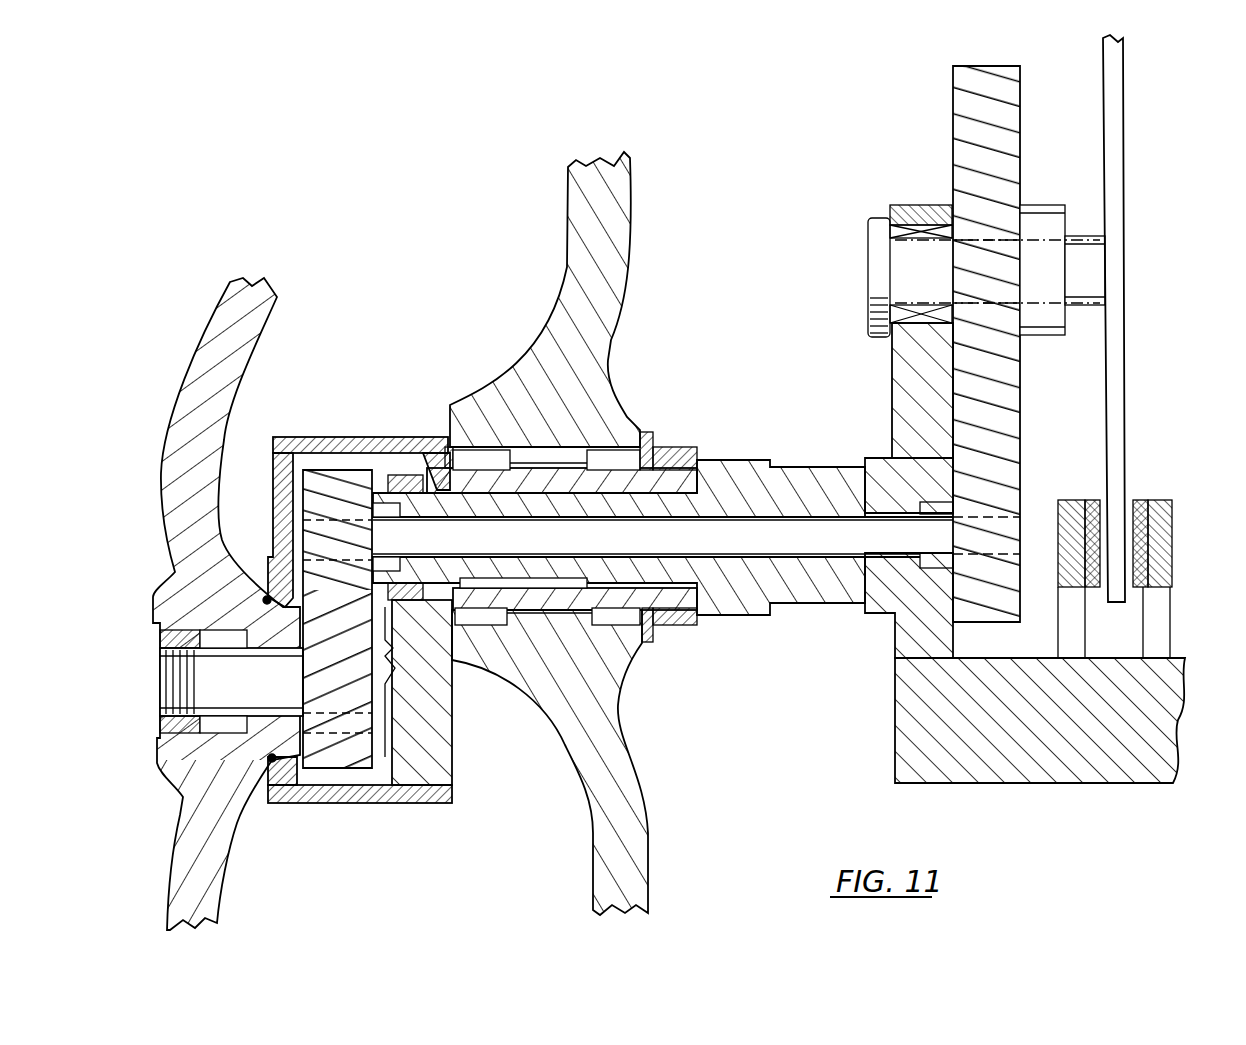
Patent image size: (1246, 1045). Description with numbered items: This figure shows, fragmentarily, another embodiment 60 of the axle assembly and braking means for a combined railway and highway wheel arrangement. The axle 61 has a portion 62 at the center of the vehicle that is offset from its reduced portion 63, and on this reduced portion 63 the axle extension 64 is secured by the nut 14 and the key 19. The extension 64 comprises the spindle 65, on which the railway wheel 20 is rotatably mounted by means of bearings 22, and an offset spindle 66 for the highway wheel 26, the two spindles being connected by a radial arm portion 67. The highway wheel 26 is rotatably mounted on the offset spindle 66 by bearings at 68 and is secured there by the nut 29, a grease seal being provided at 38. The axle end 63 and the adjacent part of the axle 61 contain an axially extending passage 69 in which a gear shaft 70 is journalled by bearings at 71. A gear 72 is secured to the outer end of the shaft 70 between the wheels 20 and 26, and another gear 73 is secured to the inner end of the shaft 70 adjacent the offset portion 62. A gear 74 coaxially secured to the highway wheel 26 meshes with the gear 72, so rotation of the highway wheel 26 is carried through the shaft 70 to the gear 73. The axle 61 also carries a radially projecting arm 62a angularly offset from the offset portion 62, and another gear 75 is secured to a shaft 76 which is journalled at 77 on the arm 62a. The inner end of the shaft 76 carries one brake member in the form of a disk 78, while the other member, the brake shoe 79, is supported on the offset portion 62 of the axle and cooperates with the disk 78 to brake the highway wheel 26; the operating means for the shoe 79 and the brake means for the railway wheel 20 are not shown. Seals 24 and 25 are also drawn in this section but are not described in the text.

The nut 14 is at (406, 470).
The key 19 is at (545, 575).
The railway wheel 20 is at (628, 206).
The bearings 22 is at (592, 458).
The seal 24 is at (696, 635).
The seal 25 is at (648, 432).
The highway wheel 26 is at (258, 320).
The nut 29 is at (160, 640).
The grease seal 38 is at (165, 745).
The embodiment of the axle assembly and braking means 60 is at (972, 796).
The axle 61 is at (908, 592).
The offset portion 62 is at (1110, 773).
The radially projecting arm 62a is at (912, 372).
The reduced portion 63 is at (668, 622).
The axle extension 64 is at (462, 742).
The spindle 65 is at (683, 447).
The offset spindle 66 is at (253, 688).
The radial arm portion 67 is at (425, 695).
The bearings 68 is at (232, 720).
The axially extending passage 69 is at (806, 560).
The gear shaft 70 is at (726, 542).
The bearings 71 is at (395, 512).
The gear 72 is at (326, 483).
The gear 73 is at (1025, 465).
The gear 74 is at (358, 765).
The gear 75 is at (1008, 125).
The shaft 76 is at (1085, 245).
The journal 77 is at (922, 212).
The disk 78 is at (1118, 357).
The brake shoe 79 is at (1157, 505).